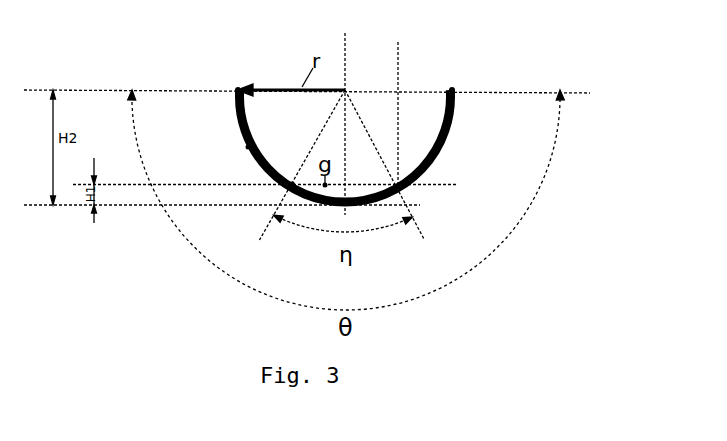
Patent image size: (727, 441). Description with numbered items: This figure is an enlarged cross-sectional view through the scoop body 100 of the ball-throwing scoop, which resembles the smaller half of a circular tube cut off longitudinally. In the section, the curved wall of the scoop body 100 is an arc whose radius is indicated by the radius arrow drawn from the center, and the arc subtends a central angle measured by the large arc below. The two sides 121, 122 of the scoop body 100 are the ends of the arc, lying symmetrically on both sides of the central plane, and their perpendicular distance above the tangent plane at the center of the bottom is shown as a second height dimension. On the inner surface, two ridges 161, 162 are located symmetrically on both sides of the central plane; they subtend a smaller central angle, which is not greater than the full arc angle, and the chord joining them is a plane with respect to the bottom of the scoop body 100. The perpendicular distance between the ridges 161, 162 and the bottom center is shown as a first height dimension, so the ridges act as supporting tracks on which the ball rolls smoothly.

The scoop body 100 is at (247, 147).
The side 121 is at (452, 90).
The side 122 is at (237, 90).
The ridge 161 is at (398, 96).
The ridge 162 is at (291, 184).